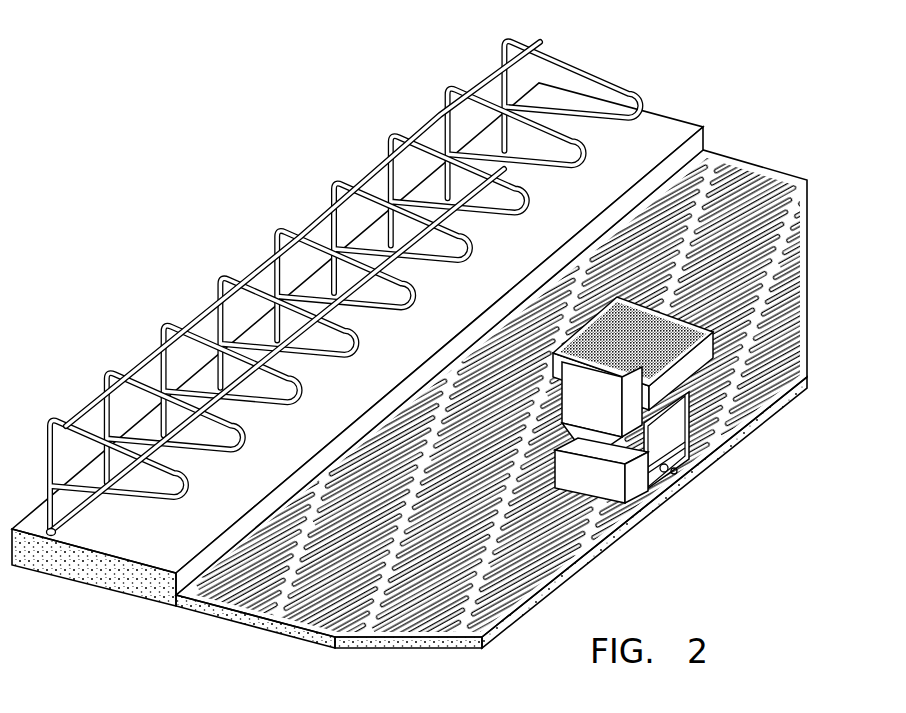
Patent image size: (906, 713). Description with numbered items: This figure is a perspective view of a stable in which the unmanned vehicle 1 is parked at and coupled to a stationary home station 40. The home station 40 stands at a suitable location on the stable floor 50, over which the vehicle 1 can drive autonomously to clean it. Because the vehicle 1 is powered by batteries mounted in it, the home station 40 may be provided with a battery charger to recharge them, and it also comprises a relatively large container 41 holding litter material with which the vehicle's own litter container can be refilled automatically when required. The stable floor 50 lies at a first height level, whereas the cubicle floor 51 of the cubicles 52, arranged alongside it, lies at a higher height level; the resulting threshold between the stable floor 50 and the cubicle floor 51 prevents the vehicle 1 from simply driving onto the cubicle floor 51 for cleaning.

The unmanned vehicle 1 is at (636, 469).
The home station 40 is at (700, 420).
The container 41 is at (662, 333).
The stable floor 50 is at (323, 537).
The cubicle floor 51 is at (186, 523).
The cubicles 52 is at (317, 207).